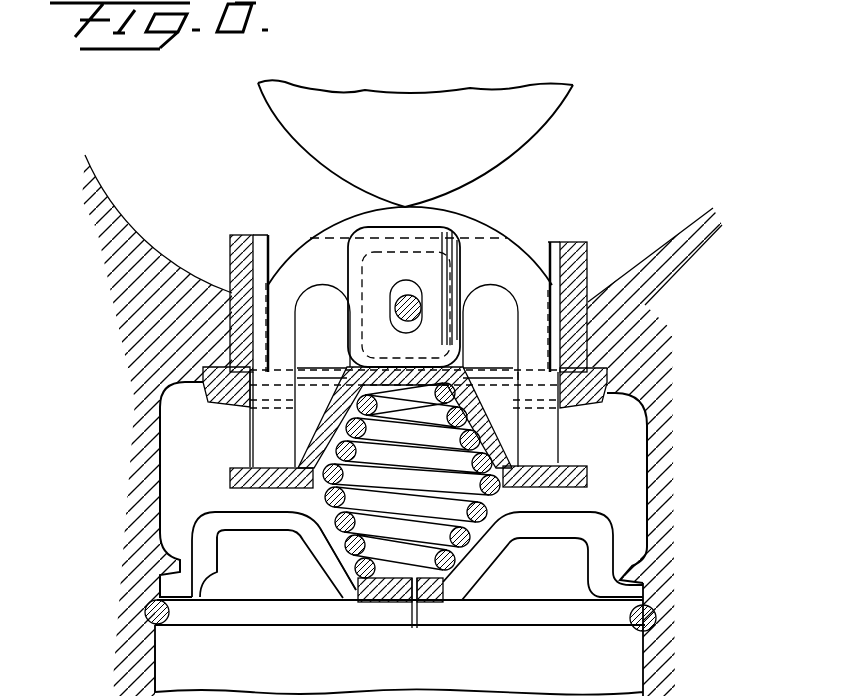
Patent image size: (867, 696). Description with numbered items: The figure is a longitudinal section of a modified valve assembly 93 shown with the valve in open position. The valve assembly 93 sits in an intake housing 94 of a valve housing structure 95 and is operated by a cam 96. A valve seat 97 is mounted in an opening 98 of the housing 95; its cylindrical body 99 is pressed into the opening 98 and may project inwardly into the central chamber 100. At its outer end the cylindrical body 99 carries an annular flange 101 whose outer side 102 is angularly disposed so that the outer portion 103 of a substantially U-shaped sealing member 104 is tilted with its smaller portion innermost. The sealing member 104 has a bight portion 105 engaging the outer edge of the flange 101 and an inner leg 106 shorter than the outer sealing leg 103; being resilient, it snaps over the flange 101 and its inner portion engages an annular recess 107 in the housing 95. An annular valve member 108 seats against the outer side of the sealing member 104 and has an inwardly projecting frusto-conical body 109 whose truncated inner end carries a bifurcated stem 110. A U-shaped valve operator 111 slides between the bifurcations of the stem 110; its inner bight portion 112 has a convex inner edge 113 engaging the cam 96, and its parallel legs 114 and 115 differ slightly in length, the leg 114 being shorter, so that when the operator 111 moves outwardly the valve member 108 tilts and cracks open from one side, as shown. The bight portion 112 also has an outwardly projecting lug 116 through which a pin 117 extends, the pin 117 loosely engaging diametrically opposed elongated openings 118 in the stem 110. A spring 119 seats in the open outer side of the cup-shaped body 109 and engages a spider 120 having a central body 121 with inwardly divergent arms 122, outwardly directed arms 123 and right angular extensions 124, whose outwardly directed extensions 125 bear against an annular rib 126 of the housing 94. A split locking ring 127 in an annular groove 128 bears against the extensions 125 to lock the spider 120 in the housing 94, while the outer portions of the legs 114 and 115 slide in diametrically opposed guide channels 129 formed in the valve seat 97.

The valve assembly 93 is at (553, 550).
The intake housing 94 is at (643, 654).
The valve housing structure 95 is at (680, 233).
The cam 96 is at (557, 107).
The valve seat 97 is at (593, 238).
The opening 98 is at (654, 452).
The cylindrical body 99 is at (232, 250).
The central chamber 100 is at (136, 222).
The annular flange 101 is at (160, 436).
The outer side of the flange 102 is at (240, 409).
The outer sealing leg 103 is at (580, 418).
The sealing member 104 is at (607, 398).
The bight portion 105 is at (640, 373).
The inner leg 106 is at (637, 336).
The annular recess 107 is at (203, 374).
The valve member 108 is at (231, 476).
The frusto-conical body 109 is at (512, 443).
The bifurcated stem 110 is at (445, 237).
The valve operator 111 is at (318, 246).
The bight portion 112 is at (503, 250).
The convex inner edge 113 is at (540, 237).
The leg 114 is at (522, 336).
The leg 115 is at (312, 329).
The lug 116 is at (478, 323).
The pin 117 is at (410, 298).
The elongated openings 118 is at (390, 292).
The spring 119 is at (540, 498).
The spider 120 is at (455, 594).
The central body 121 is at (377, 594).
The inwardly divergent arms 122 is at (313, 554).
The outwardly directed arms 123 is at (257, 524).
The right angular extensions 124 is at (210, 563).
The outwardly directed extensions 125 is at (175, 591).
The annular flange or rib 126 is at (172, 543).
The split locking ring 127 is at (290, 614).
The annular groove 128 is at (150, 644).
The guide channels 129 is at (263, 243).